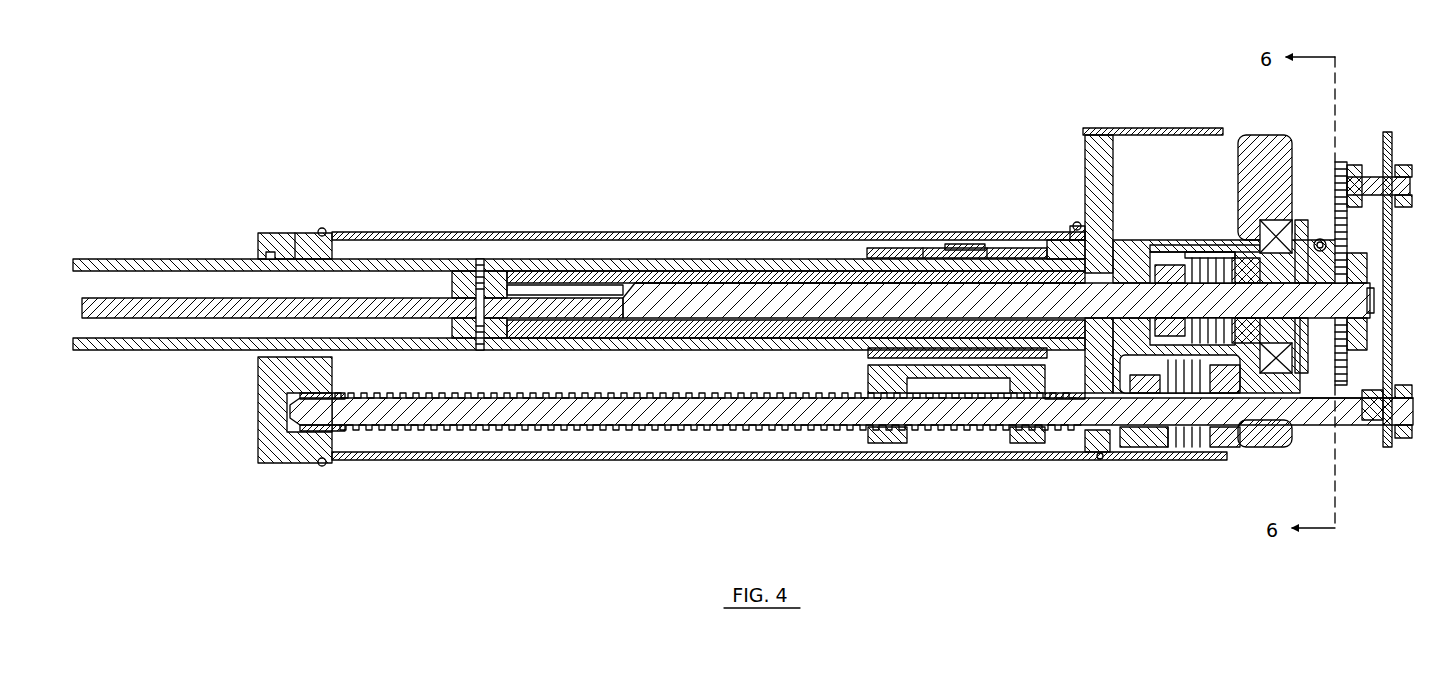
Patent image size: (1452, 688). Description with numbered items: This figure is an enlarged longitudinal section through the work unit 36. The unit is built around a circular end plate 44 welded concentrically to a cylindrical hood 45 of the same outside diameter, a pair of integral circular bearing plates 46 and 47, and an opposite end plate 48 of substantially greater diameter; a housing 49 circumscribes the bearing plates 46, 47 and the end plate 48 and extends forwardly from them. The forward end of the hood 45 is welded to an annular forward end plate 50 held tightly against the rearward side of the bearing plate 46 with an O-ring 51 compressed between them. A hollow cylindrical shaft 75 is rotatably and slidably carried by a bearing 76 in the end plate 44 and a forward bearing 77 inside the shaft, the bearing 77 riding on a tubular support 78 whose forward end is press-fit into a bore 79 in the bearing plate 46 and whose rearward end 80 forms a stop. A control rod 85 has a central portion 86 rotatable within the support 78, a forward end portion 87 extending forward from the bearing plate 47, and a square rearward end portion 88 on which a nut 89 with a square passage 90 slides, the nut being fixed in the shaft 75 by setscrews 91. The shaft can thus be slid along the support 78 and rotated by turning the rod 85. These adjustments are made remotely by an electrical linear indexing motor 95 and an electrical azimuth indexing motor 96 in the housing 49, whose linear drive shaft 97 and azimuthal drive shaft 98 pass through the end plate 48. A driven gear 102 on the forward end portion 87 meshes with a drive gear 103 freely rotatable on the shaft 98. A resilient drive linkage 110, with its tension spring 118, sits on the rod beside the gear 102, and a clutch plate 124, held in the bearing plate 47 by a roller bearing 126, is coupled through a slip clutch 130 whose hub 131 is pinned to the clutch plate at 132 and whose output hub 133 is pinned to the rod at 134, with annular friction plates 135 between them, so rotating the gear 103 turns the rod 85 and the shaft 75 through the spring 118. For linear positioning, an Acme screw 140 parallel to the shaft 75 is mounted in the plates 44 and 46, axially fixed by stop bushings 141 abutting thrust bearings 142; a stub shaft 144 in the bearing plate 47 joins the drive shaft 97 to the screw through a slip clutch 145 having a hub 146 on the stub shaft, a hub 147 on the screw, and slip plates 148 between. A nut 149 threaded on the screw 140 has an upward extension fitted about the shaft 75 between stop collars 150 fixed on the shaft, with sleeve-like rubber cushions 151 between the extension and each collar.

The work unit 36 is at (683, 218).
The circular end plate 44 is at (278, 233).
The cylindrical hood 45 is at (582, 232).
The rearward bearing plate 46 is at (1088, 152).
The forward bearing plate 47 is at (1265, 135).
The end plate 48 is at (1388, 132).
The housing 49 is at (1130, 128).
The annular forward end plate 50 is at (1076, 222).
The O-ring 51 is at (1072, 233).
The hollow cylindrical shaft 75 is at (220, 259).
The bearing 76 is at (302, 233).
The forward bearing 77 is at (1045, 240).
The tubular support 78 is at (715, 283).
The bore 79 is at (1110, 259).
The rearward end 80 is at (512, 323).
The control rod 85 is at (742, 335).
The central portion 86 is at (765, 315).
The forward end portion 87 is at (1314, 311).
The rearward end portion 88 is at (160, 306).
The nut 89 is at (462, 338).
The square passage 90 is at (456, 293).
The setscrews 91 is at (485, 262).
The electrical linear indexing motor 95 is at (1405, 420).
The electrical azimuth indexing motor 96 is at (1400, 170).
The linear drive shaft 97 is at (1370, 422).
The azimuthal drive shaft 98 is at (1375, 177).
The driven gear 102 is at (1352, 262).
The drive gear 103 is at (1340, 162).
The resilient drive linkage 110 is at (1358, 351).
The tension spring 118 is at (1328, 243).
The clutch plate 124 is at (1300, 226).
The roller bearing 126 is at (1290, 366).
The slip clutch 130 is at (1185, 244).
The hub 131 is at (1258, 279).
The pin connection 132 is at (1250, 240).
The output hub 133 is at (1178, 279).
The pin connection 134 is at (1183, 240).
The annular friction plates 135 is at (1192, 242).
The Acme screw 140 is at (640, 394).
The stop bushings 141 is at (345, 393).
The thrust bearings 142 is at (345, 431).
The stub shaft 144 is at (1315, 427).
The slip clutch 145 is at (1150, 447).
The hub 146 is at (1265, 449).
The hub 147 is at (1130, 455).
The slip plates 148 is at (1200, 448).
The nut 149 is at (1010, 436).
The stop collars 150 is at (878, 248).
The sleeve-like cushions 151 is at (925, 248).